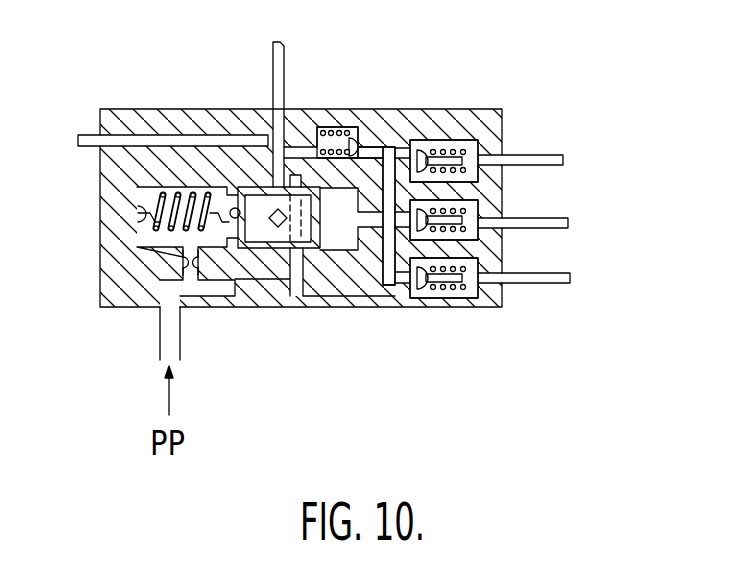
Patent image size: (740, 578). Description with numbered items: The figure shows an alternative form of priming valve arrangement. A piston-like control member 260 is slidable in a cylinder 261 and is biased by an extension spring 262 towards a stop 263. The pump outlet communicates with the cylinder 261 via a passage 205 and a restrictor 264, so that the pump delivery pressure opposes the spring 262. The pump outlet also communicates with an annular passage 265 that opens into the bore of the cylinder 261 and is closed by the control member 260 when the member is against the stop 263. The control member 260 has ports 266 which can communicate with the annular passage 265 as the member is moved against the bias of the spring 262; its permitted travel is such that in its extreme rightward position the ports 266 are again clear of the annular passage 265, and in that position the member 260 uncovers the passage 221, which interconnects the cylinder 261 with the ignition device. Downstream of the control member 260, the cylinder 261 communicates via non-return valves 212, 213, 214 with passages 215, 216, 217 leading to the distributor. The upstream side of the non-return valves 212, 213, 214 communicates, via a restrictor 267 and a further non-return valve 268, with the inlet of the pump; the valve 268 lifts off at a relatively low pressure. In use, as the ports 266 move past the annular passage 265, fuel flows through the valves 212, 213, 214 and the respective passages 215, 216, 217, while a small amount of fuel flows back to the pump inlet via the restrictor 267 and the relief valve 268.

The passage 205 is at (167, 338).
The non-return valve 212 is at (466, 290).
The non-return valve 213 is at (450, 203).
The non-return valve 214 is at (448, 134).
The passage 215 is at (553, 281).
The passage 216 is at (548, 223).
The passage 217 is at (548, 160).
The passage 221 is at (277, 67).
The control member 260 is at (257, 230).
The cylinder 261 is at (185, 178).
The extension spring 262 is at (122, 135).
The stop 263 is at (232, 238).
The restrictor 264 is at (188, 262).
The annular passage 265 is at (298, 175).
The ports 266 is at (286, 226).
The restrictor 267 is at (376, 148).
The non-return valve 268 is at (348, 120).